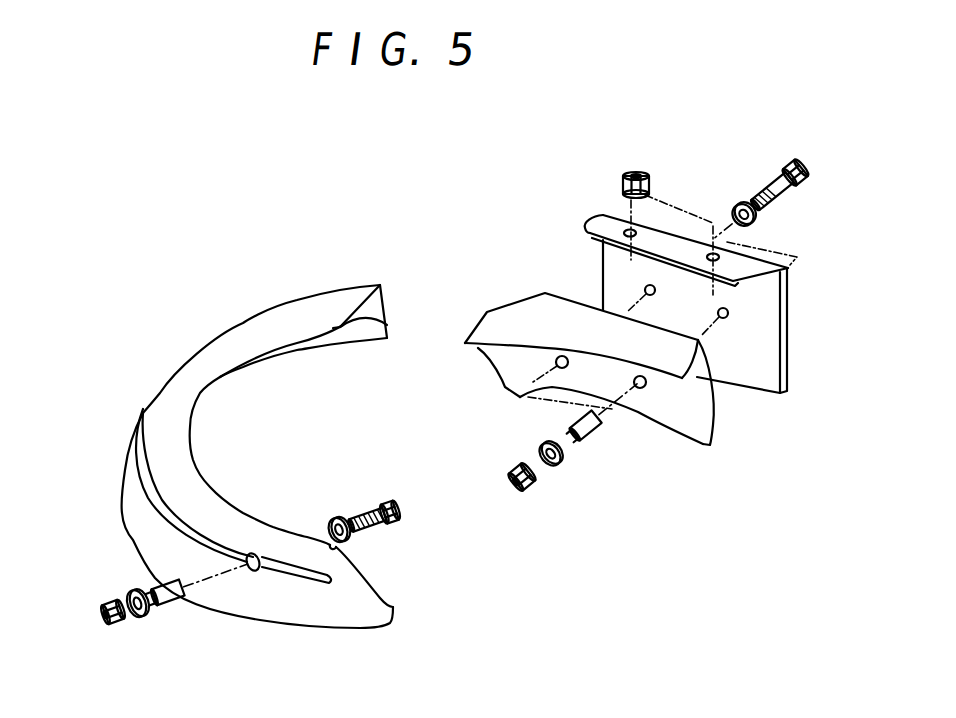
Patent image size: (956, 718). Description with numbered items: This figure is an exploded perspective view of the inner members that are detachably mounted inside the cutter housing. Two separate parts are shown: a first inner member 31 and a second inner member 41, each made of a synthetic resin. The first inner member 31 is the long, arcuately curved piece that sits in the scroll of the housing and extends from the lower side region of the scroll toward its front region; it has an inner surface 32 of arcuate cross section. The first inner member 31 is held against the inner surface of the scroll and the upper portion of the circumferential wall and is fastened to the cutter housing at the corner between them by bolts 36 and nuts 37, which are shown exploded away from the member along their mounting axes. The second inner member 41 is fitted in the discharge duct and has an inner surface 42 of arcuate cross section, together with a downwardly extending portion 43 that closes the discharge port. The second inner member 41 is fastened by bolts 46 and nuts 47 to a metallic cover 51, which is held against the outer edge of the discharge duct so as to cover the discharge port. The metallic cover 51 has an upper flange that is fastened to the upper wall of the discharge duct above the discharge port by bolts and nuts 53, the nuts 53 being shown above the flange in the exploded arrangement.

The first inner member 31 is at (112, 495).
The inner surface 32 is at (307, 340).
The bolts 36 is at (405, 514).
The nuts 37 is at (110, 623).
The second inner member 41 is at (663, 431).
The inner surface 42 is at (598, 360).
The downwardly extending portion 43 is at (637, 388).
The bolts 46 is at (812, 158).
The nuts 47 is at (527, 492).
The metallic cover 51 is at (789, 332).
The nuts 53 is at (632, 168).